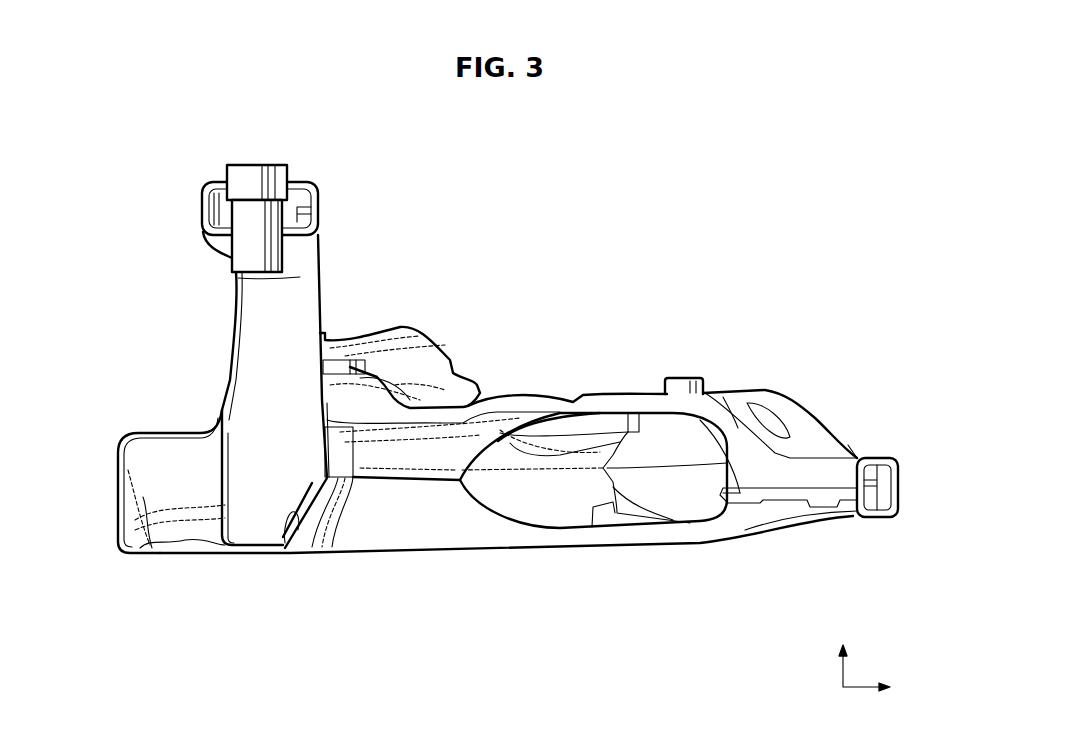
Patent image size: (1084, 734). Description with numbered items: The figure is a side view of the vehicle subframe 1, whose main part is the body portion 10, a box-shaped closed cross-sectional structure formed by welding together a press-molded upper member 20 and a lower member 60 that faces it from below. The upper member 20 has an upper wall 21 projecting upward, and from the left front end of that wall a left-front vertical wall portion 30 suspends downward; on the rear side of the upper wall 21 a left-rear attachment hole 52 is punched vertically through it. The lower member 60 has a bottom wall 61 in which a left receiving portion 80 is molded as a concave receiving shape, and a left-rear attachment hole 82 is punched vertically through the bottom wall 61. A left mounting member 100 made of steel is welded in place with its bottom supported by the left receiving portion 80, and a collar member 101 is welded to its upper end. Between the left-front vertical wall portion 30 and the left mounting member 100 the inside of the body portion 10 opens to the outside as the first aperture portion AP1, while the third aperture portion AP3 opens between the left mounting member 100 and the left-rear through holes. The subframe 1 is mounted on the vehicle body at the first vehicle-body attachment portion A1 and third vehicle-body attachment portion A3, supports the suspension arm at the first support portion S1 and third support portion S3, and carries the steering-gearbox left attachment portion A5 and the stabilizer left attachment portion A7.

The subframe 1 is at (815, 212).
The body portion 10 is at (715, 272).
The upper member 20 is at (645, 330).
The upper wall 21 is at (513, 392).
The left-front vertical wall portion 30 is at (118, 490).
The left-rear attachment hole 52 is at (858, 455).
The lower member 60 is at (722, 556).
The bottom wall 61 is at (407, 556).
The left receiving portion 80 is at (286, 530).
The left-rear attachment hole 82 is at (830, 513).
The left mounting member 100 is at (213, 322).
The collar member 101 is at (252, 177).
The first vehicle-body attachment portion A1 is at (307, 182).
The third vehicle-body attachment portion A3 is at (852, 437).
The steering-gearbox left attachment portion A5 is at (330, 330).
The stabilizer left attachment portion A7 is at (623, 384).
The first aperture portion AP1 is at (145, 500).
The third aperture portion AP3 is at (548, 512).
The first support portion S1 is at (130, 420).
The third support portion S3 is at (692, 380).